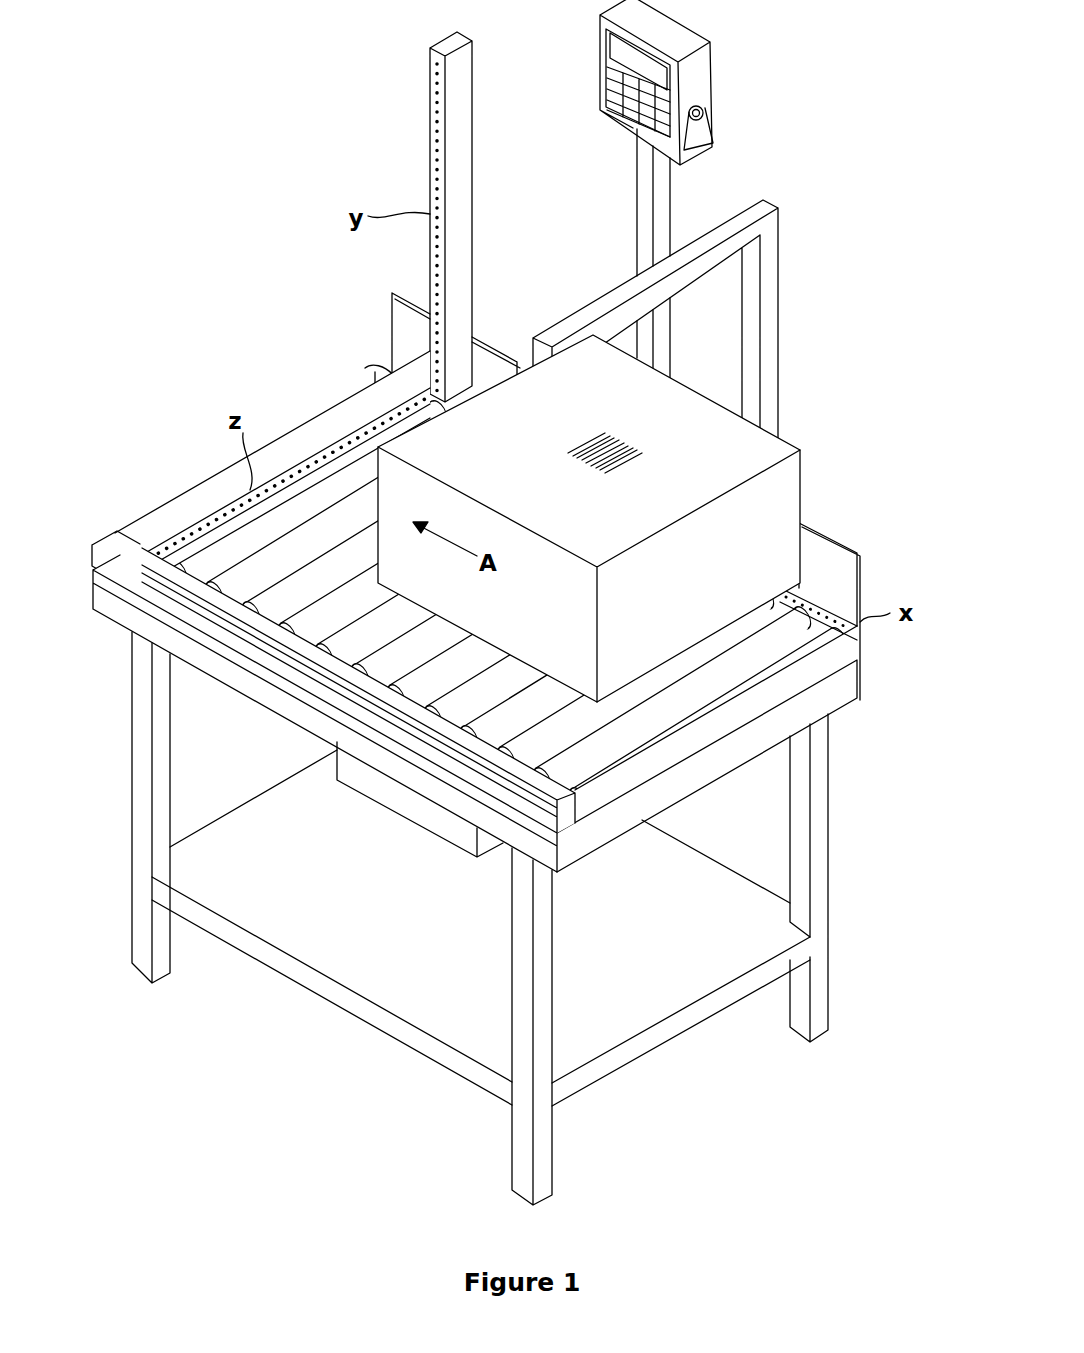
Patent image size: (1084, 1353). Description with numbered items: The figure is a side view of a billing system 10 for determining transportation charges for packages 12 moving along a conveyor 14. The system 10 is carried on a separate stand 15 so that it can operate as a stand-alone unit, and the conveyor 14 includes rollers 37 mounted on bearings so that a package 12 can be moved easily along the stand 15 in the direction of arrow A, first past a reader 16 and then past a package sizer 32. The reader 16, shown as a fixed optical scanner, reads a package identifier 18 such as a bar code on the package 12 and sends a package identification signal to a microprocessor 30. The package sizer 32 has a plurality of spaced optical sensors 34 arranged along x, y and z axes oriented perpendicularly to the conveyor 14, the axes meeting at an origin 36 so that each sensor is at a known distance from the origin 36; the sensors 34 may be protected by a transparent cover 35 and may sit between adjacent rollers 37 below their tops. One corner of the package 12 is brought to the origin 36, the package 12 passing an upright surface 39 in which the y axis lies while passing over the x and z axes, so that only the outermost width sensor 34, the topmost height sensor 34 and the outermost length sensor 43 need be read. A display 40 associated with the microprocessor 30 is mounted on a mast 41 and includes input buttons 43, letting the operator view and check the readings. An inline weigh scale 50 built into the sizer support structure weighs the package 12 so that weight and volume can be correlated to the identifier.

The billing system 10 is at (856, 398).
The package 12 is at (782, 480).
The conveyor 14 is at (825, 685).
The stand 15 is at (830, 808).
The reader 16 is at (550, 336).
The package identifier 18 is at (643, 455).
The microprocessor 30 is at (420, 810).
The package sizer 32 is at (375, 190).
The optical sensors 34 is at (430, 102).
The transparent cover 35 is at (145, 560).
The origin 36 is at (396, 372).
The rollers 37 is at (642, 746).
The upright surface 39 is at (848, 583).
The display 40 is at (690, 60).
The mast 41 is at (662, 183).
The input buttons 43 is at (607, 95).
The inline weigh scale 50 is at (272, 697).